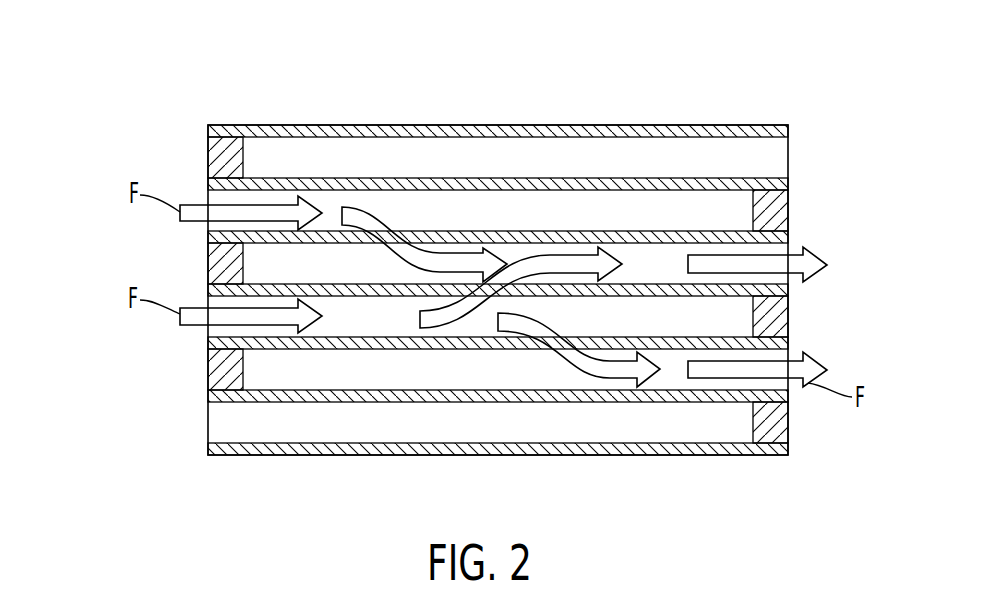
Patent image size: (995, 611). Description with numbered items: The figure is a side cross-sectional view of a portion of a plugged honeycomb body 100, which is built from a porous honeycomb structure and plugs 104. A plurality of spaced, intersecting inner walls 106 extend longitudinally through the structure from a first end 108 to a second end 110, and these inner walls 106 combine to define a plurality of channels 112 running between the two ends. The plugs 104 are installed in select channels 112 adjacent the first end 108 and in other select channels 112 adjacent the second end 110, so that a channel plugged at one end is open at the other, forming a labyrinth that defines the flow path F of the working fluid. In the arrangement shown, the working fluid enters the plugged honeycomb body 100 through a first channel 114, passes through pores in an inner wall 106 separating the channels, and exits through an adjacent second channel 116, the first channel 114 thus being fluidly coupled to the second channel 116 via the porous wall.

The plugged honeycomb body 100 is at (705, 100).
The plugs 104 is at (222, 159).
The inner walls 106 is at (338, 188).
The first end 108 is at (112, 143).
The second end 110 is at (879, 344).
The channels 112 is at (655, 268).
The first channel 114 is at (195, 336).
The second channel 116 is at (814, 241).